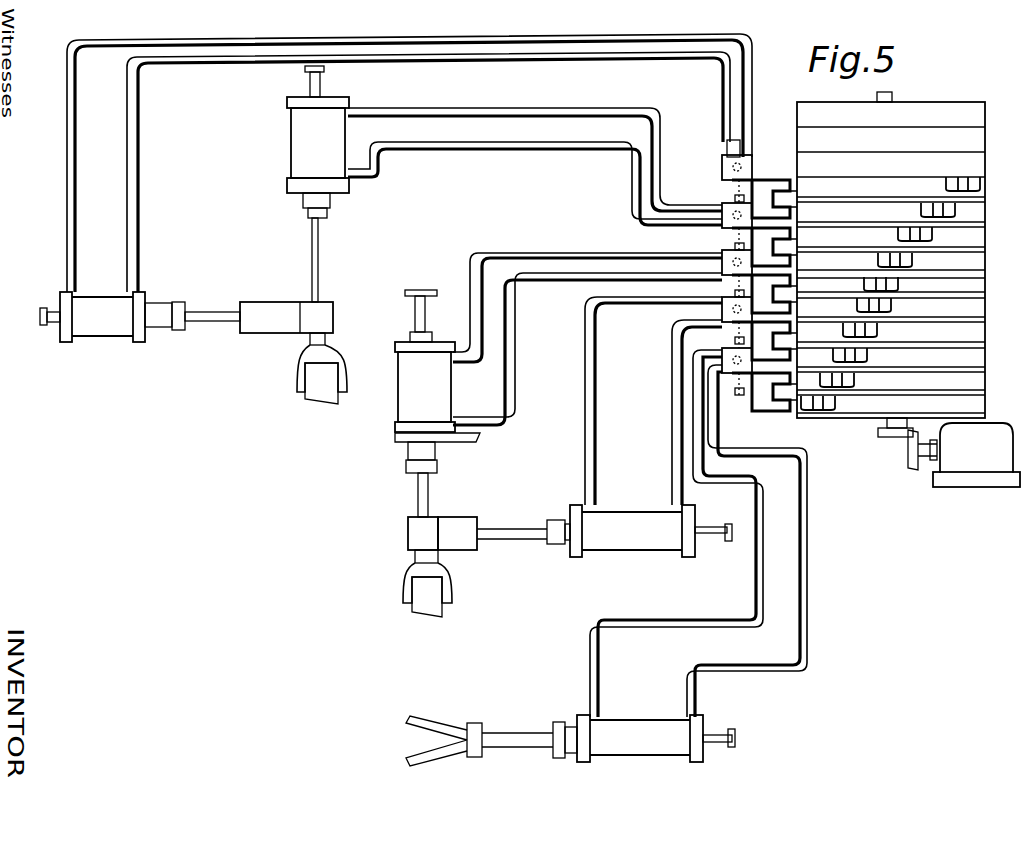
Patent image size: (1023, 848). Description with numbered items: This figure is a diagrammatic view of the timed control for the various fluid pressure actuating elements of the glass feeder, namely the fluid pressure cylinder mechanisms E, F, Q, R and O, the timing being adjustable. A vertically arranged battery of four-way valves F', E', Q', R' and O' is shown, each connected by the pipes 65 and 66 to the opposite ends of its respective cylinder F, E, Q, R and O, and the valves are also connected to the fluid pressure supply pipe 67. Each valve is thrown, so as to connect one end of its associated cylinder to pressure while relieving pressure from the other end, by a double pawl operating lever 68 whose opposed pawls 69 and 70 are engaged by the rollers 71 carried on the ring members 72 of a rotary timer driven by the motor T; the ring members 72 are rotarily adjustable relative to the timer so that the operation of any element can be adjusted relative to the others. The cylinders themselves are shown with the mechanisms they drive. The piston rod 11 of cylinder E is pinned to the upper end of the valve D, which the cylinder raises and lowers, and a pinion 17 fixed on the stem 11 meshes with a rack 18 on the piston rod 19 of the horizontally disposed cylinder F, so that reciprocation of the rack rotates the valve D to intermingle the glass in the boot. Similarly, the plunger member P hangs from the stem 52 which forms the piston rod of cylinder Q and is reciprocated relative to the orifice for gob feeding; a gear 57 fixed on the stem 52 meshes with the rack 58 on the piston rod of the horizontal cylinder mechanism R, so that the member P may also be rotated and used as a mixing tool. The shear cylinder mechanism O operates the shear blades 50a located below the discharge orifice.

The piston rod 11 is at (319, 265).
The pinion 17 is at (334, 309).
The rack 18 is at (270, 302).
The piston rod 19 is at (192, 323).
The shear blades 50a is at (402, 732).
The stem 52 is at (418, 492).
The gear 57 is at (420, 532).
The rack 58 is at (465, 517).
The pipe 65 is at (127, 276).
The pipe 66 is at (67, 276).
The fluid pressure supply pipe 67 is at (732, 146).
The double pawl operating lever 68 is at (770, 182).
The pawl 69 is at (797, 190).
The pawl 70 is at (797, 208).
The roller 71 is at (886, 268).
The ring member 72 is at (985, 240).
The fluid pressure cylinder E is at (318, 142).
The fluid pressure cylinder F is at (92, 317).
The fluid pressure cylinder Q is at (437, 381).
The fluid pressure cylinder mechanism R is at (604, 531).
The fluid pressure cylinder mechanism O is at (644, 758).
The plunger member P is at (436, 618).
The valve D is at (320, 404).
The motor T is at (949, 452).
The four-way valve F' is at (723, 178).
The four-way valve E' is at (721, 216).
The four-way valve Q' is at (721, 263).
The four-way valve R' is at (696, 322).
The four-way valve O' is at (696, 367).